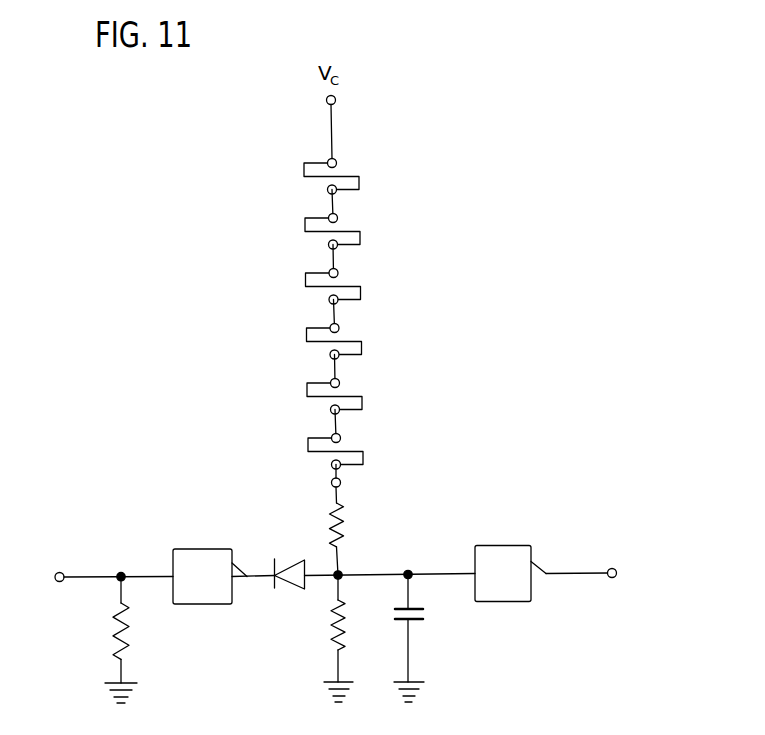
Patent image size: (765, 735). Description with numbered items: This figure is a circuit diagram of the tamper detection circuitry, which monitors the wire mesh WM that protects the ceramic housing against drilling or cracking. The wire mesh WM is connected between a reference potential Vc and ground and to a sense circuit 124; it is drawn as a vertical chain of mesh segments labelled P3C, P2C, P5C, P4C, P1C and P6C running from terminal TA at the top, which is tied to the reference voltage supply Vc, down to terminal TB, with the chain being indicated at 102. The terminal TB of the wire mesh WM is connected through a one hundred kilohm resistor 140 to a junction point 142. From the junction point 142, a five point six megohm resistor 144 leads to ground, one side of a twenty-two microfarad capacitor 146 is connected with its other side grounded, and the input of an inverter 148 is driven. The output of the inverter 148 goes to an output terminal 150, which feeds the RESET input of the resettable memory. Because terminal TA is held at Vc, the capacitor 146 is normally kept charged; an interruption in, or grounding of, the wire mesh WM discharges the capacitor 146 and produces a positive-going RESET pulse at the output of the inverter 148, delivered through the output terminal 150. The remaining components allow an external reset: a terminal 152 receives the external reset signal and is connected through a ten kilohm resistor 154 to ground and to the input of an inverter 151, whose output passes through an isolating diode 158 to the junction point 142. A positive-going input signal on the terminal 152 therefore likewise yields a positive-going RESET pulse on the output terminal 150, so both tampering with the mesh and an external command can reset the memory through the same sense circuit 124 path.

The weighting resistor chain (upper portion) 102 is at (452, 176).
The sense circuit 124 is at (447, 453).
The wire mesh WM is at (297, 306).
The terminal TA is at (336, 99).
The terminal TB is at (341, 482).
The programmable element P3C is at (350, 175).
The programmable element P2C is at (351, 230).
The programmable element P5C is at (352, 285).
The programmable element P4C is at (352, 340).
The programmable element P1C is at (353, 395).
The programmable element P6C is at (354, 450).
The 100 kilohm resistor 140 is at (330, 512).
The junction point 142 is at (342, 572).
The 5.6 megohm resistor 144 is at (340, 641).
The 22 microfarad capacitor 146 is at (423, 622).
The inverter 148 is at (500, 545).
The output terminal 150 is at (612, 568).
The inverter 151 is at (194, 549).
The terminal 152 is at (60, 572).
The 10 kilohm resistor 154 is at (112, 627).
The isolating diode 158 is at (297, 557).